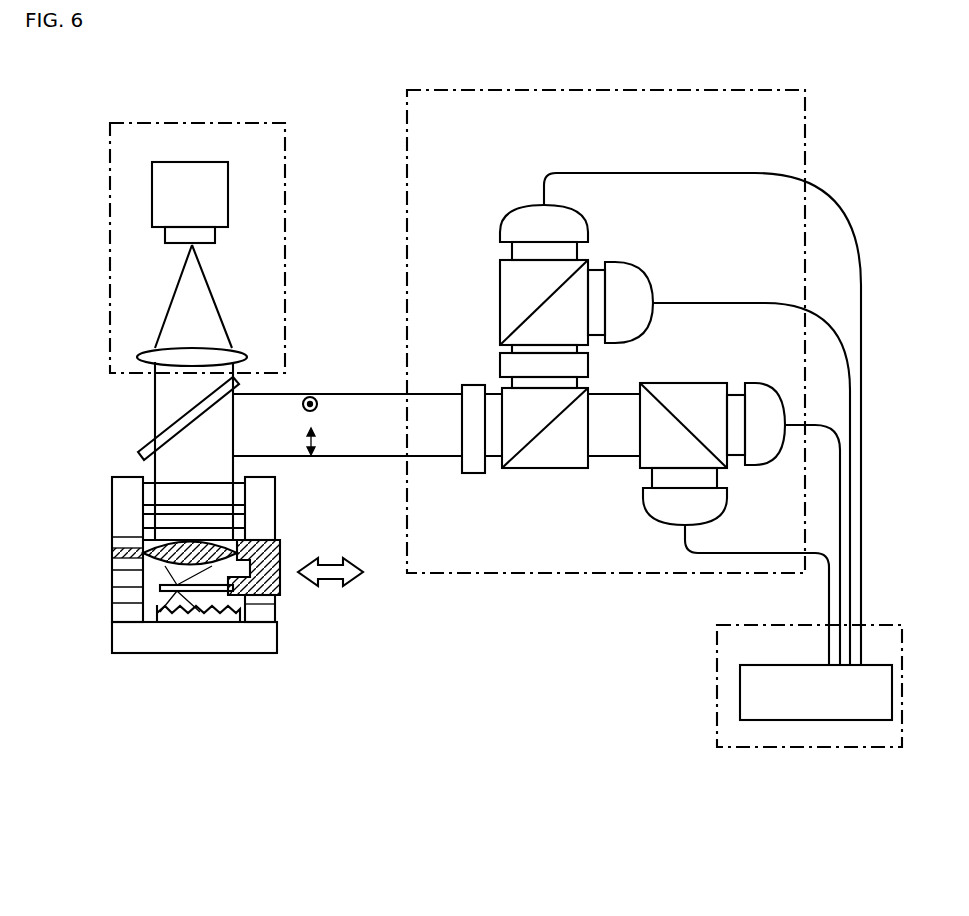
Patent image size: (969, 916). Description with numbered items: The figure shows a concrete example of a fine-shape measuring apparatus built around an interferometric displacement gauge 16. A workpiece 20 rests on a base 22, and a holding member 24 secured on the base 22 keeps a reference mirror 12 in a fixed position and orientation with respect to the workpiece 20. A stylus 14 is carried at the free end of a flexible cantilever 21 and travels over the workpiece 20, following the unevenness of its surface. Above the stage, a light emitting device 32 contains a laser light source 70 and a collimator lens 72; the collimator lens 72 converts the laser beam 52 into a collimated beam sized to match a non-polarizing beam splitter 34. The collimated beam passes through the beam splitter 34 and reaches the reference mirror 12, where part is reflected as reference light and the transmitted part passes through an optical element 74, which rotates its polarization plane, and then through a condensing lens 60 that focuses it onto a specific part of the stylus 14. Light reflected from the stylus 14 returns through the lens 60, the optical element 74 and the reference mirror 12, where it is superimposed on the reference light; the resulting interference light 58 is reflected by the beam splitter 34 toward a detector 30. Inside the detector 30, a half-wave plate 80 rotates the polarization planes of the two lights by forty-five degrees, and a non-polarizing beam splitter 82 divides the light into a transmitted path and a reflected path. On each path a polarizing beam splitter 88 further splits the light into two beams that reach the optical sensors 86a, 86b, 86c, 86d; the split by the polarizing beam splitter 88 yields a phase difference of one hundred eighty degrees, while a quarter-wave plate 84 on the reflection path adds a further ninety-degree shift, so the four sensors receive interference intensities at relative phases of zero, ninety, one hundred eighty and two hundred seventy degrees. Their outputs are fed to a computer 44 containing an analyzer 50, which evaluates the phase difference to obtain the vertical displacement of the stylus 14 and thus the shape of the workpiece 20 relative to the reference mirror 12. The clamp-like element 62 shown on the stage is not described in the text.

The reference mirror 12 is at (143, 490).
The stylus 14 is at (160, 608).
The interferometric displacement gauge 16 is at (364, 328).
The workpiece 20 is at (143, 622).
The cantilever 21 is at (160, 588).
The base 22 is at (244, 642).
The holding member 24 is at (277, 605).
The detector 30 is at (730, 90).
The light emitting device 32 is at (248, 123).
The non-polarizing beam splitter 34 is at (145, 452).
The computer 44 is at (717, 672).
The analyzer 50 is at (748, 665).
The laser beam 52 is at (210, 289).
The interference light 58 is at (320, 394).
The condensing lens 60 is at (145, 560).
The clamp 62 is at (240, 522).
The laser light source 70 is at (208, 162).
The collimator lens 72 is at (240, 353).
The optical element 74 is at (143, 524).
The λ/2 plate 80 is at (473, 473).
The non-polarizing beam splitter 82 is at (540, 470).
The λ/4 plate 84 is at (500, 363).
The optical sensor 86a is at (588, 228).
The optical sensor 86b is at (650, 272).
The optical sensor 86c is at (748, 383).
The optical sensor 86d is at (727, 510).
The polarizing beam splitter 88 is at (500, 294).